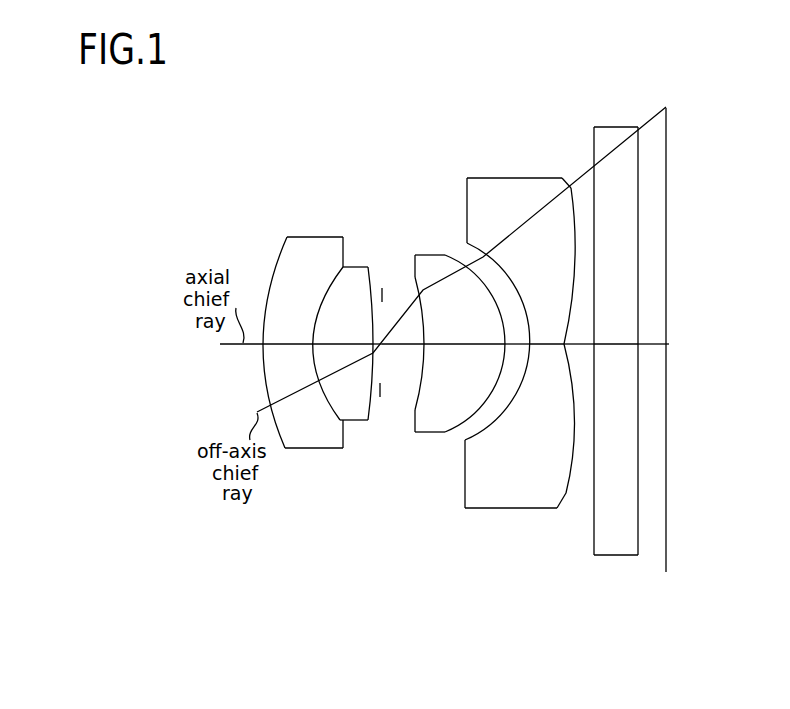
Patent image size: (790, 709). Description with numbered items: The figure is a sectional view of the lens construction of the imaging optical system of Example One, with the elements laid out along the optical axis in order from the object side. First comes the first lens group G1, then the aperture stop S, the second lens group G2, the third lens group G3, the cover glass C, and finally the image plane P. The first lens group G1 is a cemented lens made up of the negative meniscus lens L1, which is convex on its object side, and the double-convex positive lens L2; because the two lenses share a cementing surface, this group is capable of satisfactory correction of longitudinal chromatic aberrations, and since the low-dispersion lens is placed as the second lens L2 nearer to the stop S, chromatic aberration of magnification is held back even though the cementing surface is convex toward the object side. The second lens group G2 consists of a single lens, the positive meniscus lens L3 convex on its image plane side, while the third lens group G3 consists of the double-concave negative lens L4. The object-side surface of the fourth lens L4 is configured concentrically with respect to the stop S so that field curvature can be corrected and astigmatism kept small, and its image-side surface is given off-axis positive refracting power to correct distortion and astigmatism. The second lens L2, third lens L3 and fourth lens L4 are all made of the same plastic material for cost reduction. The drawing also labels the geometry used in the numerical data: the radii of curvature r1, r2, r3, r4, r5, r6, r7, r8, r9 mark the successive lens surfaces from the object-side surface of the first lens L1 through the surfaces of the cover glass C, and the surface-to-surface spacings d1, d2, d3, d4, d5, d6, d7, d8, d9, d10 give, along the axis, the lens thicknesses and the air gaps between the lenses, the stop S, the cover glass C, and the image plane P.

The first lens group G1 is at (313, 246).
The second lens group G2 is at (455, 239).
The third lens group G3 is at (522, 278).
The first lens L1 is at (300, 257).
The second lens L2 is at (353, 268).
The third lens L3 is at (432, 250).
The fourth lens L4 is at (527, 195).
The aperture stop S is at (383, 289).
The cover glass C is at (620, 138).
The image plane P is at (667, 198).
The radius of curvature of lens surface r1 is at (279, 265).
The radius of curvature of lens surface r2 is at (327, 283).
The radius of curvature of lens surface r3 is at (371, 292).
The radius of curvature of lens surface r4 is at (417, 255).
The radius of curvature of lens surface r5 is at (458, 268).
The radius of curvature of lens surface r6 is at (488, 250).
The radius of curvature of lens surface r7 is at (577, 212).
The radius of curvature of lens surface r8 is at (593, 162).
The radius of curvature of lens surface r9 is at (645, 145).
The lens surface-to-lens surface spacing d1 is at (288, 360).
The lens surface-to-lens surface spacing d2 is at (343, 360).
The lens surface-to-lens surface spacing d3 is at (381, 384).
The lens surface-to-lens surface spacing d4 is at (403, 360).
The lens surface-to-lens surface spacing d5 is at (465, 360).
The lens surface-to-lens surface spacing d6 is at (515, 347).
The lens surface-to-lens surface spacing d7 is at (547, 359).
The lens surface-to-lens surface spacing d8 is at (579, 359).
The lens surface-to-lens surface spacing d9 is at (616, 359).
The lens surface-to-lens surface spacing d10 is at (650, 347).